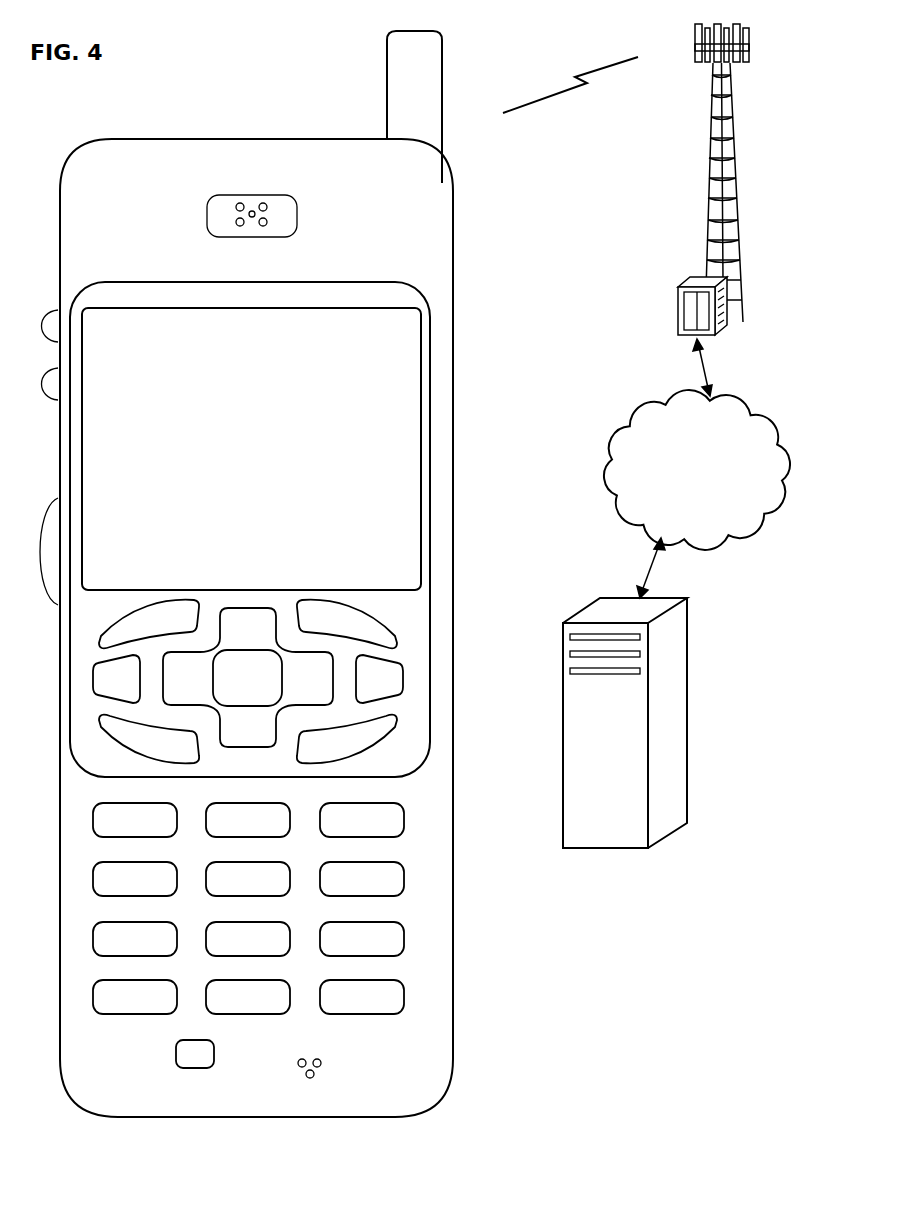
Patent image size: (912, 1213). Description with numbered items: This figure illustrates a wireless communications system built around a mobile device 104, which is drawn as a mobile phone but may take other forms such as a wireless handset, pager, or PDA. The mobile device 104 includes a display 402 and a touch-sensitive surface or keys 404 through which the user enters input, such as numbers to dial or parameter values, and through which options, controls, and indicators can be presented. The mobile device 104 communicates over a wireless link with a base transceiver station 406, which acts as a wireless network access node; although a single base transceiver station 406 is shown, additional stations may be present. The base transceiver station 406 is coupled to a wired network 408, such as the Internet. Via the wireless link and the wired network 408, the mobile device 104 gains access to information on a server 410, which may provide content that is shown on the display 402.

The mobile device 104 is at (150, 121).
The display 402 is at (426, 306).
The keys 404 is at (455, 993).
The base transceiver station 406 is at (708, 190).
The wired network 408 is at (624, 517).
The server 410 is at (604, 848).